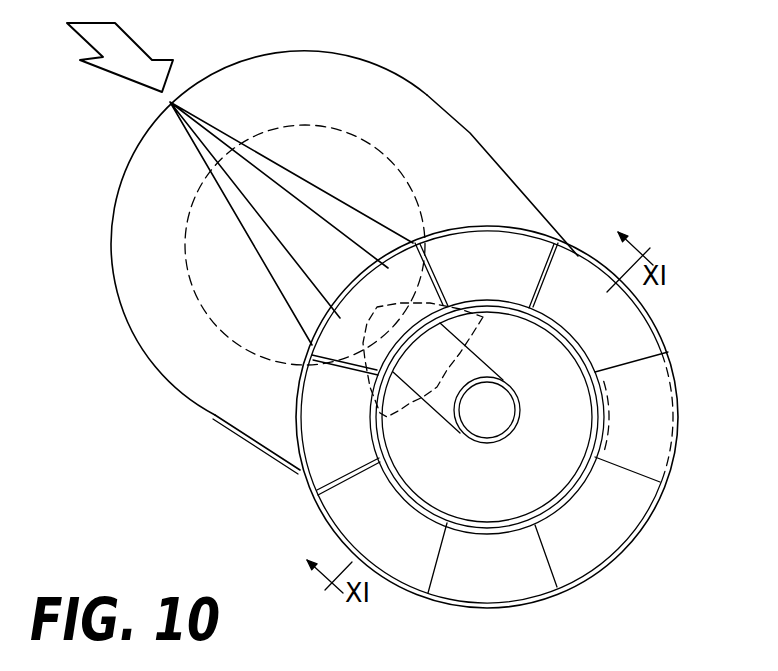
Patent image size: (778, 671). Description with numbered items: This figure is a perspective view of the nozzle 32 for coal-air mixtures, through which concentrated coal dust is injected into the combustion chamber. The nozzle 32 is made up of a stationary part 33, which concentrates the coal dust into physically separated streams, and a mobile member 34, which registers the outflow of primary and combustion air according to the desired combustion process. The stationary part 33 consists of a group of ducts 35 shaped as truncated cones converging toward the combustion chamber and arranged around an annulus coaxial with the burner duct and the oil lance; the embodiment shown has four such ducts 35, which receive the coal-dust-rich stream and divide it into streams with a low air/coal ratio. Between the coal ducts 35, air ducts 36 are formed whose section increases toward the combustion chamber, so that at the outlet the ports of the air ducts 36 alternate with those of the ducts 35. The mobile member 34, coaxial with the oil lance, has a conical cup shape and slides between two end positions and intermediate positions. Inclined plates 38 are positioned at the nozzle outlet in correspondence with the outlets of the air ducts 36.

The nozzle for coal-air mixtures 32 is at (495, 158).
The stationary part 33 is at (232, 404).
The mobile member 34 is at (547, 475).
The ducts 35 is at (518, 248).
The air ducts 36 is at (283, 230).
The inclined plates 38 is at (640, 330).